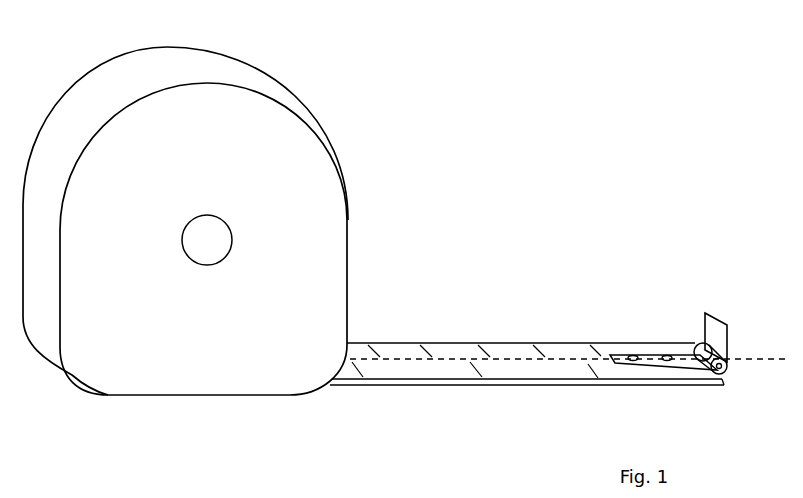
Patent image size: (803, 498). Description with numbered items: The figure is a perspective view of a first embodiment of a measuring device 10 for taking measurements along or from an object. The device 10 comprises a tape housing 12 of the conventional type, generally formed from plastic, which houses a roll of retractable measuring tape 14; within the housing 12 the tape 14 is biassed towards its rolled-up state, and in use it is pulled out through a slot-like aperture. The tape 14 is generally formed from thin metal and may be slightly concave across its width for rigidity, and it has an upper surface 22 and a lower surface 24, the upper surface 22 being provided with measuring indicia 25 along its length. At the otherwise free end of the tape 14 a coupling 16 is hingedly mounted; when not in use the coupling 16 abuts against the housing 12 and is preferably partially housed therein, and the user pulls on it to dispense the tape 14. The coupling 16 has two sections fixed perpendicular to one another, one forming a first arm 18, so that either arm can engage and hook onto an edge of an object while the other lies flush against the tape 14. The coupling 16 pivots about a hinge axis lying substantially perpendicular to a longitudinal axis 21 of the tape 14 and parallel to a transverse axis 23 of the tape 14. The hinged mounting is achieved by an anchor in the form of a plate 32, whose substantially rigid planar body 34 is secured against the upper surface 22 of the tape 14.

The measuring device 10 is at (488, 122).
The tape housing 12 is at (230, 73).
The retractable measuring tape 14 is at (558, 356).
The coupling 16 is at (730, 334).
The first arm 18 is at (730, 341).
The longitudinal axis 21 is at (774, 360).
The upper surface 22 is at (505, 343).
The transverse axis 23 is at (703, 340).
The lower surface 24 is at (376, 388).
The measuring indicia 25 is at (375, 357).
The plate 32 is at (663, 360).
The planar body 34 is at (623, 363).